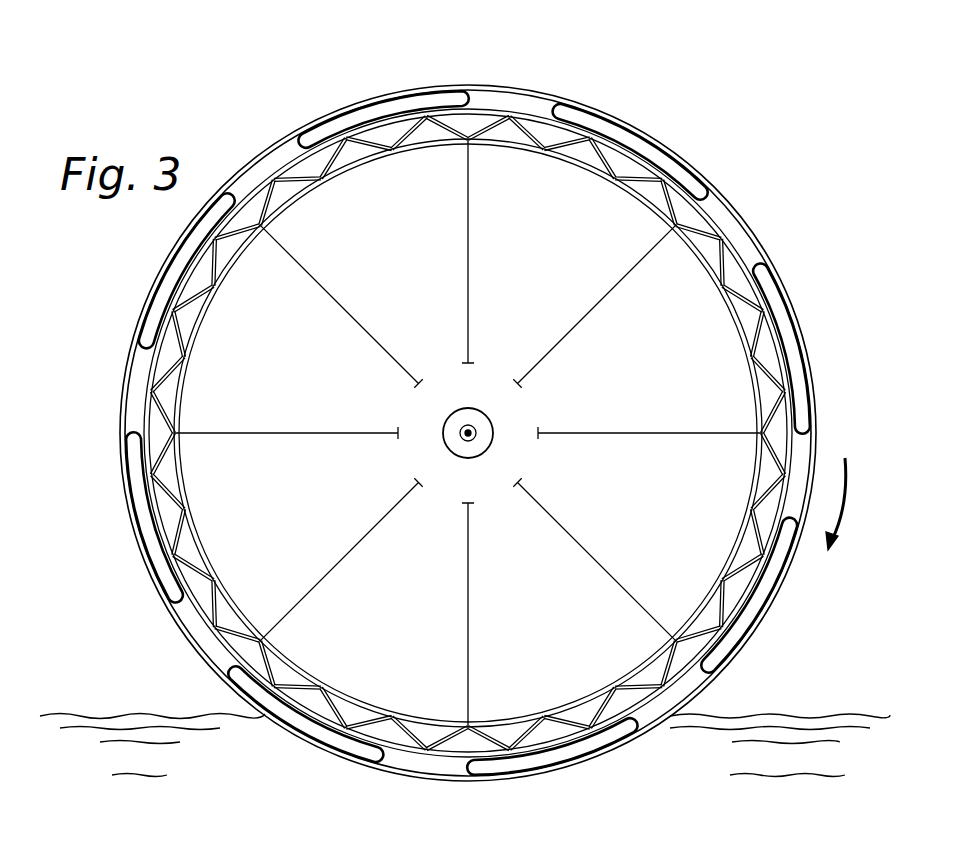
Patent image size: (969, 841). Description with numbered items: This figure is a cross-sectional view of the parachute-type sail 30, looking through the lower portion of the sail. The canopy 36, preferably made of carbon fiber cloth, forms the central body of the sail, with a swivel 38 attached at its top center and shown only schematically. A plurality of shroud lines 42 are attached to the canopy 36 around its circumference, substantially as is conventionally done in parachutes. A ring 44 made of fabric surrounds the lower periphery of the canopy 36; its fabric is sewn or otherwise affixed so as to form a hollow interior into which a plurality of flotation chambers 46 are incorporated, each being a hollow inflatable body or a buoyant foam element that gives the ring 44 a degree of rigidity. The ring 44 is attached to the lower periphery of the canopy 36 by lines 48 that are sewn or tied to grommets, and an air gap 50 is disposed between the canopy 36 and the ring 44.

The parachute-type sail 30 is at (484, 406).
The canopy 36 is at (757, 310).
The swivel 38 is at (474, 430).
The shroud lines 42 is at (470, 265).
The ring 44 is at (520, 100).
The flotation chambers 46 is at (413, 90).
The lines 48 is at (470, 127).
The air gap 50 is at (622, 162).